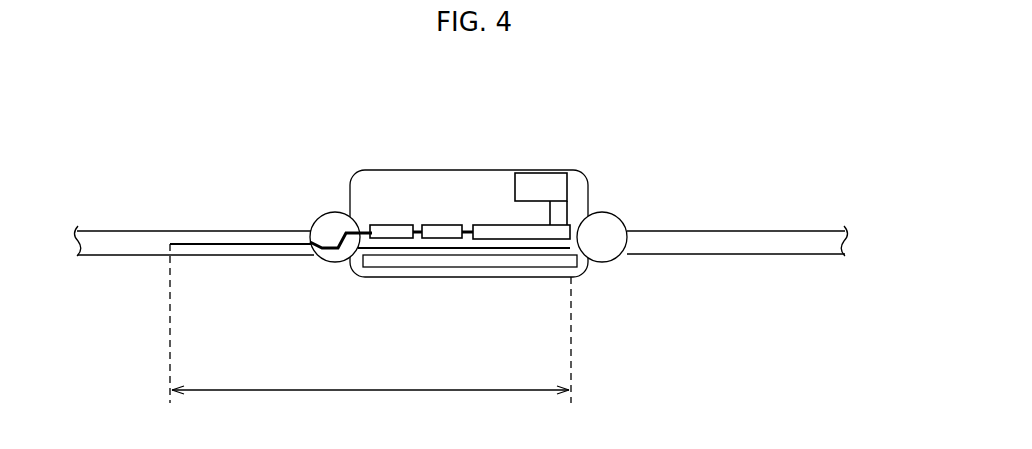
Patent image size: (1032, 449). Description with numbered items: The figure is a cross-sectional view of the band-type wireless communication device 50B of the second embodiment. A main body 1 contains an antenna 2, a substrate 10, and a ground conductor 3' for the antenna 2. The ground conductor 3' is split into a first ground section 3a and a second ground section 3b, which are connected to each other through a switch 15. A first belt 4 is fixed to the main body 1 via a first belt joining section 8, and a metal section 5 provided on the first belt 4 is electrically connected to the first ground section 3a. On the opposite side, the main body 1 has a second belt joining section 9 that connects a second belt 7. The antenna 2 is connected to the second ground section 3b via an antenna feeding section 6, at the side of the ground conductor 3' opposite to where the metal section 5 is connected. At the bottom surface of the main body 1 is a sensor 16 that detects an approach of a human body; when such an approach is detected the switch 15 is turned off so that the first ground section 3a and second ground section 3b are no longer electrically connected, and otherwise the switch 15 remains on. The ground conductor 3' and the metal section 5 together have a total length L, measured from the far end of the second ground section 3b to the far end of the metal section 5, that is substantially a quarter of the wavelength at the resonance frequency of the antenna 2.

The band-type wireless communication device 50B is at (732, 144).
The main body 1 is at (385, 159).
The antenna 2 is at (543, 178).
The first ground section 3a is at (392, 234).
The second ground section 3b is at (487, 233).
The ground conductor 3' is at (440, 343).
The first belt 4 is at (92, 232).
The metal section 5 is at (205, 243).
The antenna feeding section 6 is at (565, 208).
The second belt 7 is at (758, 232).
The first belt joining section 8 is at (335, 218).
The second belt joining section 9 is at (607, 213).
The substrate 10 is at (467, 238).
The switch 15 is at (438, 225).
The sensor 16 is at (541, 262).
The total length L is at (370, 333).